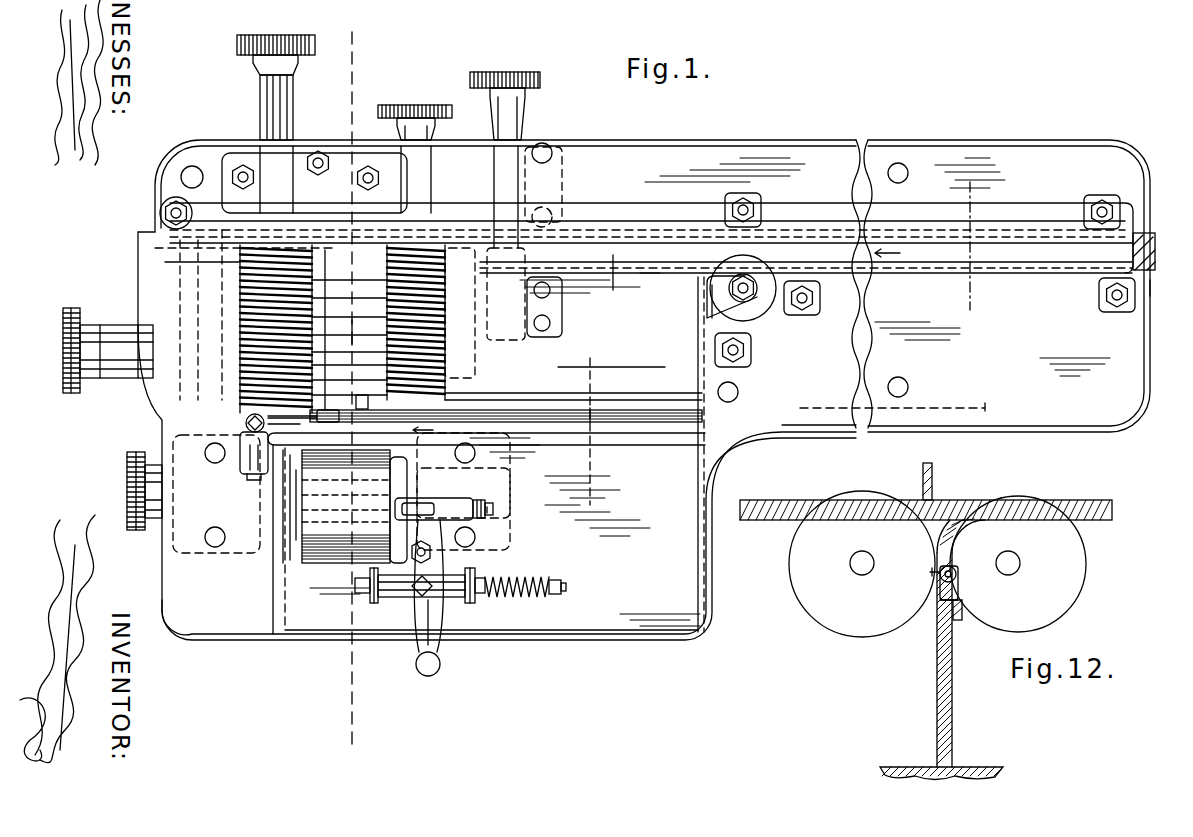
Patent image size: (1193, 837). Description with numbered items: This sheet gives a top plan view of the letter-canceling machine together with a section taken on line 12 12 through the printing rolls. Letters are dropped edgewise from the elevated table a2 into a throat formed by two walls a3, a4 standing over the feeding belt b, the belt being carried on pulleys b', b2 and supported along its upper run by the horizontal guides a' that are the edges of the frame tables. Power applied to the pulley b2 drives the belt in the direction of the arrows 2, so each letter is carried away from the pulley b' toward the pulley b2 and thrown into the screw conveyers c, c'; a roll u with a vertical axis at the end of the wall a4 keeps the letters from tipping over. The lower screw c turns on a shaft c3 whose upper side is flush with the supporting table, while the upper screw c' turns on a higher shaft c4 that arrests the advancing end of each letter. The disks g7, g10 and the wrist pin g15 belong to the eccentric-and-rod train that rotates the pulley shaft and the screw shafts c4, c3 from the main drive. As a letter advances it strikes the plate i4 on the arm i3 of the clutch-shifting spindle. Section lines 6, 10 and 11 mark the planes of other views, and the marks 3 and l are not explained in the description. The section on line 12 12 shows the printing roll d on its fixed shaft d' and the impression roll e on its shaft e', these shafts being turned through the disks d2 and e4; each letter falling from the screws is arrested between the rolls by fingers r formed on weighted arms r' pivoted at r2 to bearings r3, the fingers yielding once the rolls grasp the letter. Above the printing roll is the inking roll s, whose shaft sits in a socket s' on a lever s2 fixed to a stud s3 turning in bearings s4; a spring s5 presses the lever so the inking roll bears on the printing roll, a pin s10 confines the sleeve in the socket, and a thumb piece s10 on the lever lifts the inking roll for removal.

In FIG. 1, the disk g10 is at (275, 45).
In FIG. 1, the eccentric wrist pin g15 is at (396, 108).
In FIG. 1, the disk g7 is at (489, 75).
In FIG. 1, the section line 6 6 is at (351, 388).
In FIG. 1, the wall a3 is at (995, 242).
In FIG. 1, the wall a4 is at (1008, 272).
In FIG. 1, the elevated table a2 is at (1002, 181).
In FIG. 1, the horizontal guide a' is at (992, 349).
In FIG. 12, the horizontal guide a' is at (926, 491).
In FIG. 1, the feeding belt b is at (1153, 257).
In FIG. 1, the pulley b' is at (1161, 298).
In FIG. 1, the pulley b2 is at (557, 285).
In FIG. 1, the arrow 2 is at (897, 256).
In FIG. 1, the section line 11 11 is at (969, 249).
In FIG. 1, the section line 12 12 is at (591, 431).
In FIG. 1, the screw conveyer c is at (441, 322).
In FIG. 1, the screw conveyer c' is at (313, 329).
In FIG. 1, the shaft c3 is at (507, 397).
In FIG. 1, the shaft c4 is at (262, 417).
In FIG. 1, the section line 3 is at (359, 332).
In FIG. 1, the letter-arresting finger r is at (428, 429).
In FIG. 12, the letter-arresting finger r is at (935, 606).
In FIG. 1, the weighted arm r' is at (611, 440).
In FIG. 12, the weighted arm r' is at (955, 582).
In FIG. 12, the pivot r2 is at (956, 570).
In FIG. 12, the bearing r3 is at (958, 576).
In FIG. 1, the roll u is at (762, 297).
In FIG. 1, the arm i3 is at (288, 420).
In FIG. 1, the plate i4 is at (325, 413).
In FIG. 1, the lever l is at (362, 409).
In FIG. 1, the inking roll s is at (354, 534).
In FIG. 1, the socket s' is at (444, 499).
In FIG. 1, the lever s2 is at (437, 575).
In FIG. 1, the stud s3 is at (397, 587).
In FIG. 1, the bearing s4 is at (377, 602).
In FIG. 1, the spring s5 is at (510, 574).
In FIG. 1, the thumb piece s10 is at (422, 496).
In FIG. 1, the section line 10 10 is at (470, 510).
In FIG. 1, the shaft d' is at (297, 517).
In FIG. 12, the shaft d' is at (865, 577).
In FIG. 1, the disk d2 is at (128, 523).
In FIG. 1, the disk e4 is at (72, 318).
In FIG. 12, the printing roll d is at (862, 564).
In FIG. 12, the impression roll e is at (1018, 564).
In FIG. 12, the shaft e' is at (1013, 578).